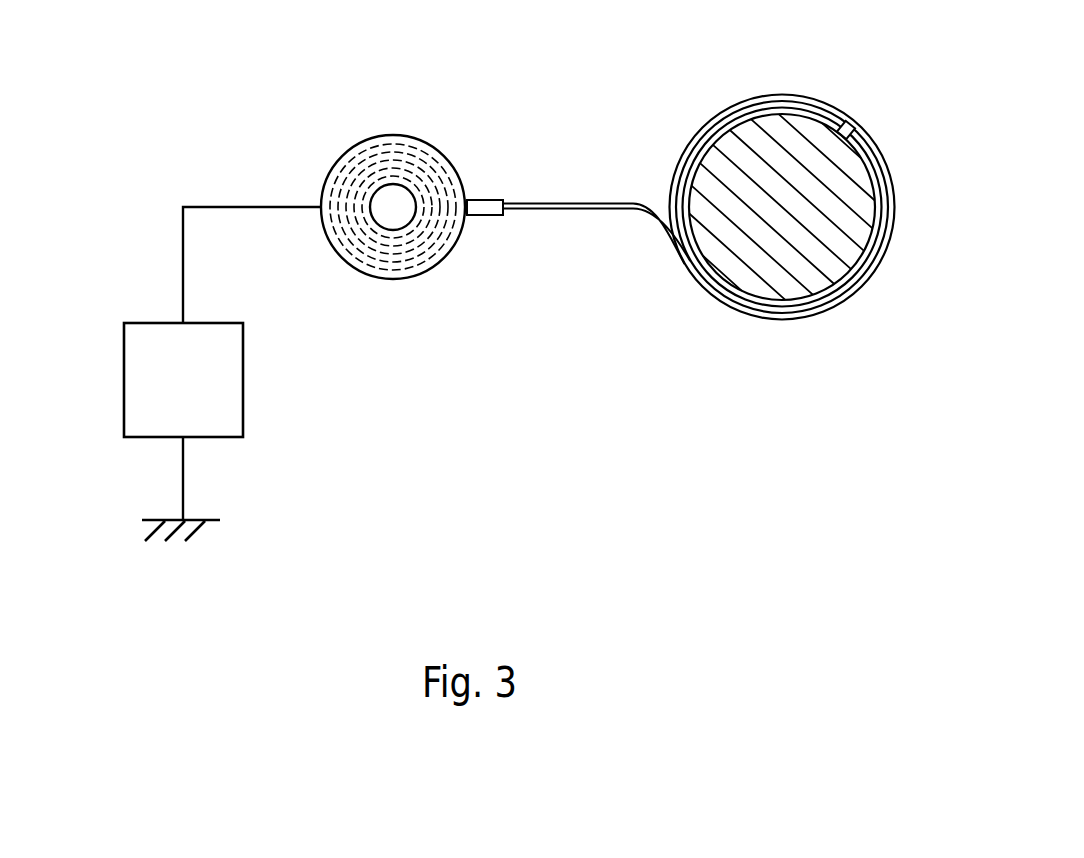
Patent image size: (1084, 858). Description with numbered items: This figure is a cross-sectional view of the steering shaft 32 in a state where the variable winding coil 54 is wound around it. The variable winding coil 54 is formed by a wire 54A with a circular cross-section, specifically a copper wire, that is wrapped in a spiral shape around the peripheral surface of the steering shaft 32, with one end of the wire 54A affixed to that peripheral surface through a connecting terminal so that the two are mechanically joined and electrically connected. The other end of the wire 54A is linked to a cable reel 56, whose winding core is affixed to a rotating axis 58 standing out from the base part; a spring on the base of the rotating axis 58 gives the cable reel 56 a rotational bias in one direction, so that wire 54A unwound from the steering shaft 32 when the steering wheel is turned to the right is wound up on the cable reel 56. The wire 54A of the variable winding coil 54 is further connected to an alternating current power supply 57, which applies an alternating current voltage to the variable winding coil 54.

The steering shaft 32 is at (774, 134).
The variable winding coil 54 is at (872, 308).
The wire 54A is at (575, 207).
The cable reel 56 is at (462, 138).
The alternating current power supply 57 is at (137, 387).
The rotating axis 58 is at (394, 207).